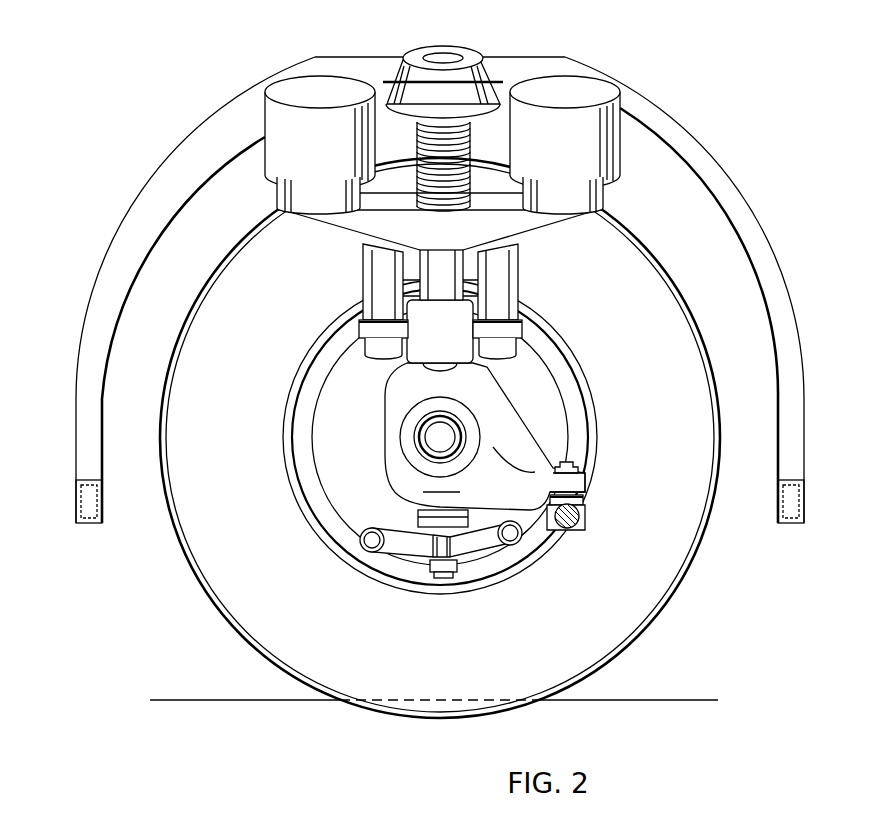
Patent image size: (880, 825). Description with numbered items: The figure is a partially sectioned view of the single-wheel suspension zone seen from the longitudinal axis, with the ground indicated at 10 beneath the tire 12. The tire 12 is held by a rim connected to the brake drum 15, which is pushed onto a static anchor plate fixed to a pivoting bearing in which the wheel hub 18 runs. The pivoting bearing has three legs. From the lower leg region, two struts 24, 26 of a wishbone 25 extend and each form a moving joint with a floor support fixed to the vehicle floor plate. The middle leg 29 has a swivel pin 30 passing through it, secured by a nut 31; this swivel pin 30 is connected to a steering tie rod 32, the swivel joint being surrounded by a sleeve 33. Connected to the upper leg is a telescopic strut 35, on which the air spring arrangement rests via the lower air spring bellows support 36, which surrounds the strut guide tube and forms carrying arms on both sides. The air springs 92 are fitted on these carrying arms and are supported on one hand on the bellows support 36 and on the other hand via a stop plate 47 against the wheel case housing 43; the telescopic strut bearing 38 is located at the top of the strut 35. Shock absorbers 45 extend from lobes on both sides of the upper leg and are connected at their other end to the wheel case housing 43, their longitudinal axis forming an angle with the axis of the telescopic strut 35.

The ground surface 10 is at (663, 700).
The tires 12 is at (690, 557).
The brake drum 15 is at (584, 364).
The wheel hub 18 is at (418, 440).
The strut 24 is at (393, 536).
The wishbone 25 is at (386, 566).
The strut 26 is at (490, 560).
The middle leg 29 is at (520, 460).
The swivel pin 30 is at (577, 462).
The nut 31 is at (585, 469).
The steering tie rod 32 is at (580, 519).
The sleeve 33 is at (583, 507).
The telescopic strut 35 is at (414, 263).
The air spring bellows support 36 is at (518, 222).
The telescopic strut bearing 38 is at (462, 52).
The wheel case housing 43 is at (700, 132).
The shock absorber 45 is at (507, 293).
The stop plate 47 is at (294, 88).
The air springs 92 is at (263, 135).